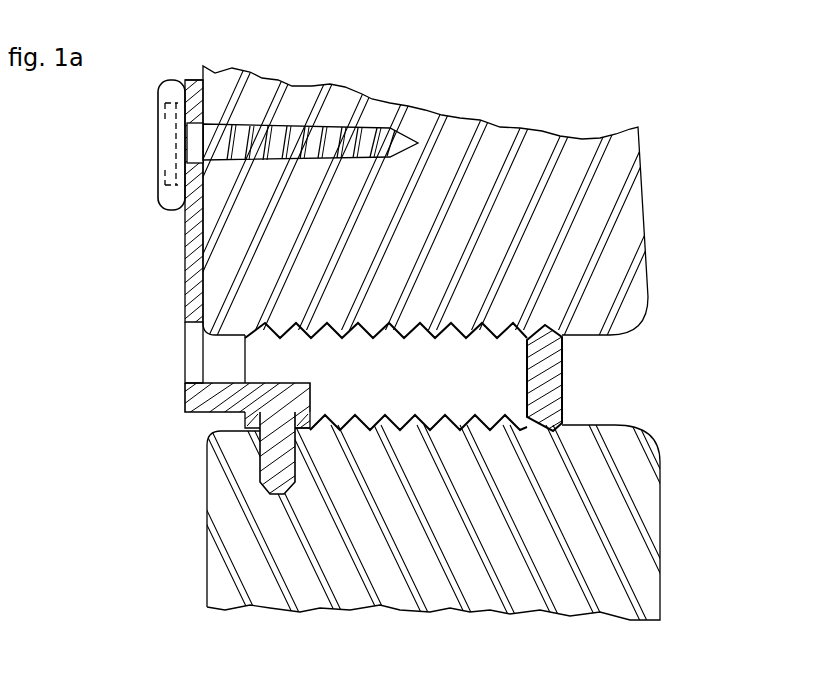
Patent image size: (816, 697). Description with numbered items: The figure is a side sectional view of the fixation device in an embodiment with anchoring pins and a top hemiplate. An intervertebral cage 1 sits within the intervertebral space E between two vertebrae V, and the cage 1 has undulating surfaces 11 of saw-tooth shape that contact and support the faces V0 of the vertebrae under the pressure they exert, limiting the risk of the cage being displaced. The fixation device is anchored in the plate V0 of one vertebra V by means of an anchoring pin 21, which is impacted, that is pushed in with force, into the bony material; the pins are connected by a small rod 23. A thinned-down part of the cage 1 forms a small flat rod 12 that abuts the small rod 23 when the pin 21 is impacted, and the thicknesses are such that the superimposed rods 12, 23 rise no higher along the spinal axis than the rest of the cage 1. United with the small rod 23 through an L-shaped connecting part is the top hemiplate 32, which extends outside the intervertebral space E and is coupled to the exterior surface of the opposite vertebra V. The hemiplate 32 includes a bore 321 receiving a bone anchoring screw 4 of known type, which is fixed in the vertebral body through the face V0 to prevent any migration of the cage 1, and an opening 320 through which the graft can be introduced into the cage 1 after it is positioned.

The intervertebral cage 1 is at (483, 392).
The undulating surface 11 is at (513, 422).
The small flat rod 12 is at (243, 420).
The anchoring pin 21 is at (276, 463).
The small rod 23 is at (256, 401).
The top hemiplate 32 is at (197, 282).
The opening 320 is at (196, 353).
The bore 321 is at (211, 78).
The bone anchoring screw 4 is at (347, 126).
The vertebra V is at (600, 205).
The plate of a vertebra V0 is at (585, 331).
The intervertebral space E is at (600, 352).